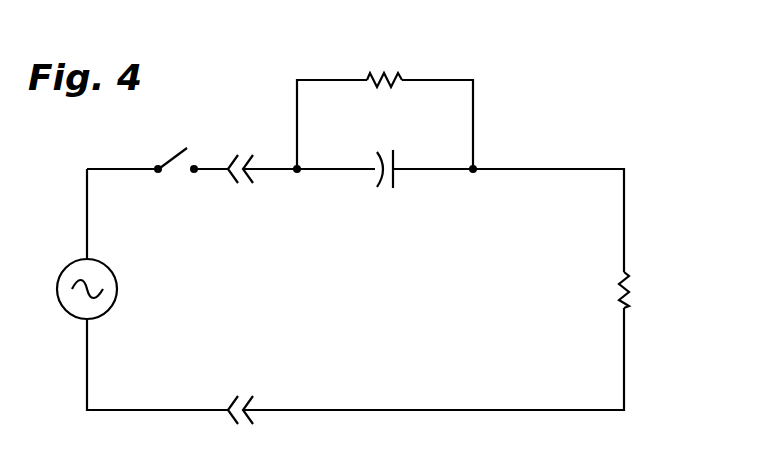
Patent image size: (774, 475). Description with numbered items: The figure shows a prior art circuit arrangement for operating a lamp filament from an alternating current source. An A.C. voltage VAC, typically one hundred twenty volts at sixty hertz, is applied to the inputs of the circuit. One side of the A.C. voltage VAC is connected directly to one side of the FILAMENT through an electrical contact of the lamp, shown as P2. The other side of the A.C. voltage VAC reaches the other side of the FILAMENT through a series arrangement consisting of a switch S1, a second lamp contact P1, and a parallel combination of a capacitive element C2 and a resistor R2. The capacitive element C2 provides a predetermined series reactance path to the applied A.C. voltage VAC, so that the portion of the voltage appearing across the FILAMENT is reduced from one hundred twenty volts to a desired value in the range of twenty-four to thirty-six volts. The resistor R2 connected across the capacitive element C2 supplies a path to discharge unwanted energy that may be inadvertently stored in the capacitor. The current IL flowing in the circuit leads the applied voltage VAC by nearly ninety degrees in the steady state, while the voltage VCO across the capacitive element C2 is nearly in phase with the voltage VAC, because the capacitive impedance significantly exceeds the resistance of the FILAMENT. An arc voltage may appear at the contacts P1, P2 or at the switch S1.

The switch S1 is at (189, 145).
The contact P1 is at (243, 184).
The resistor R2 is at (383, 74).
The capacitive element C2 is at (390, 150).
The voltage across the capacitive element VCO is at (362, 167).
The current IL is at (340, 172).
The A.C. voltage VAC is at (112, 272).
The filament FILAMENT is at (688, 260).
The contact P2 is at (244, 426).